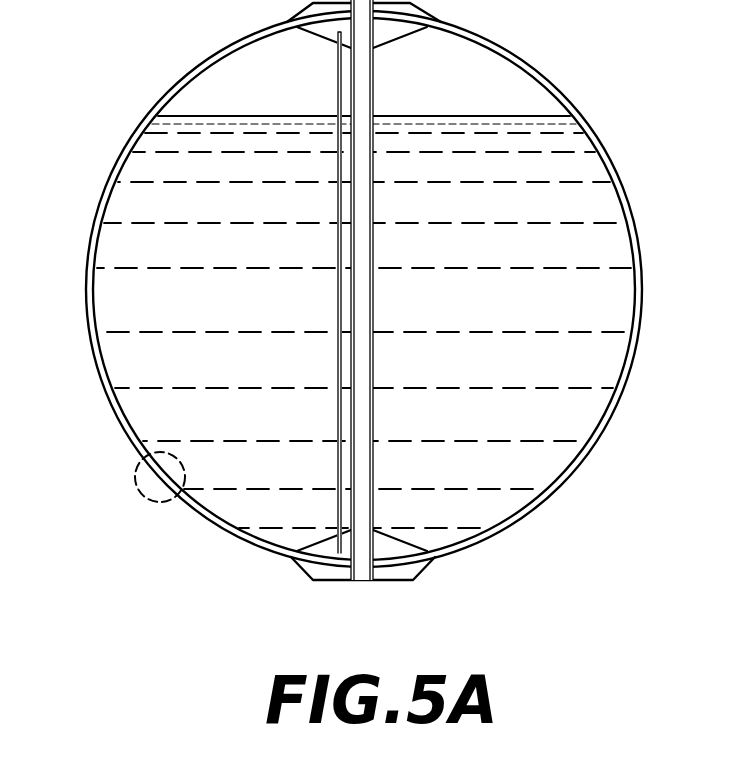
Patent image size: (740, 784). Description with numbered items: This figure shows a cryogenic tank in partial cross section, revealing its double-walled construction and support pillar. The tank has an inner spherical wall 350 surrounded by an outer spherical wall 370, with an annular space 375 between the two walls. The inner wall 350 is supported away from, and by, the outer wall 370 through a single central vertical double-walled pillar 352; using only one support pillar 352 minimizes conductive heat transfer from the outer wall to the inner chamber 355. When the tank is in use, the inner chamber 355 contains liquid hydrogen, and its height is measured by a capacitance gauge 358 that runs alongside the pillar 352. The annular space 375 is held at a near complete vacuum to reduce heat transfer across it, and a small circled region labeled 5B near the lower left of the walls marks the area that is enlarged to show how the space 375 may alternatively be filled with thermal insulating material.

The inner spherical wall 350 is at (207, 506).
The central vertical double-walled pillar 352 is at (376, 305).
The inner chamber 355 is at (310, 95).
The capacitance gauge 358 is at (336, 362).
The outer spherical wall 370 is at (207, 506).
The annular space 375 is at (124, 438).
The detail region of FIG. 5B is at (136, 488).